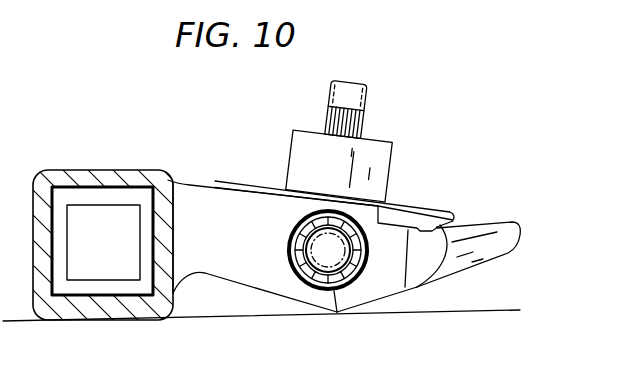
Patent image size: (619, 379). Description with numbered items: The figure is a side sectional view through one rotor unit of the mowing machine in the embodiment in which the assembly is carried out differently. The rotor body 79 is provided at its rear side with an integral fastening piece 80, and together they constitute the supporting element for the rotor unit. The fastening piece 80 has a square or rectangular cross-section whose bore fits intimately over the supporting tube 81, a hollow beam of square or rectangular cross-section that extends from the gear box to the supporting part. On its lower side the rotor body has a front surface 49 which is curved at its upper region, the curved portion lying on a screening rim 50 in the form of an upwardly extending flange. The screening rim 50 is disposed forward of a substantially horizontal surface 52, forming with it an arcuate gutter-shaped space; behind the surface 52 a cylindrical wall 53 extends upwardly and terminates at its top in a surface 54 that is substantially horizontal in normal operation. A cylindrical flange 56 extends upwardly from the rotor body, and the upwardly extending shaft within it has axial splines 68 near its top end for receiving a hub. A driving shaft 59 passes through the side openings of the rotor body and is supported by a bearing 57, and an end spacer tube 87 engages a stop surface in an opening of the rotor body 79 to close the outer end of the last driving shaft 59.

The front surface 49 is at (437, 288).
The screening rim 50 is at (510, 222).
The horizontal surface 52 is at (420, 228).
The cylindrical wall 53 is at (457, 216).
The surface 54 is at (258, 162).
The cylindrical flange 56 is at (377, 162).
The bearing 57 is at (290, 263).
The driving shaft 59 is at (322, 246).
The axial splines 68 is at (355, 123).
The rotor body 79 is at (200, 178).
The fastening piece 80 is at (72, 172).
The supporting tube 81 is at (145, 225).
The end spacer tube 87 is at (337, 313).